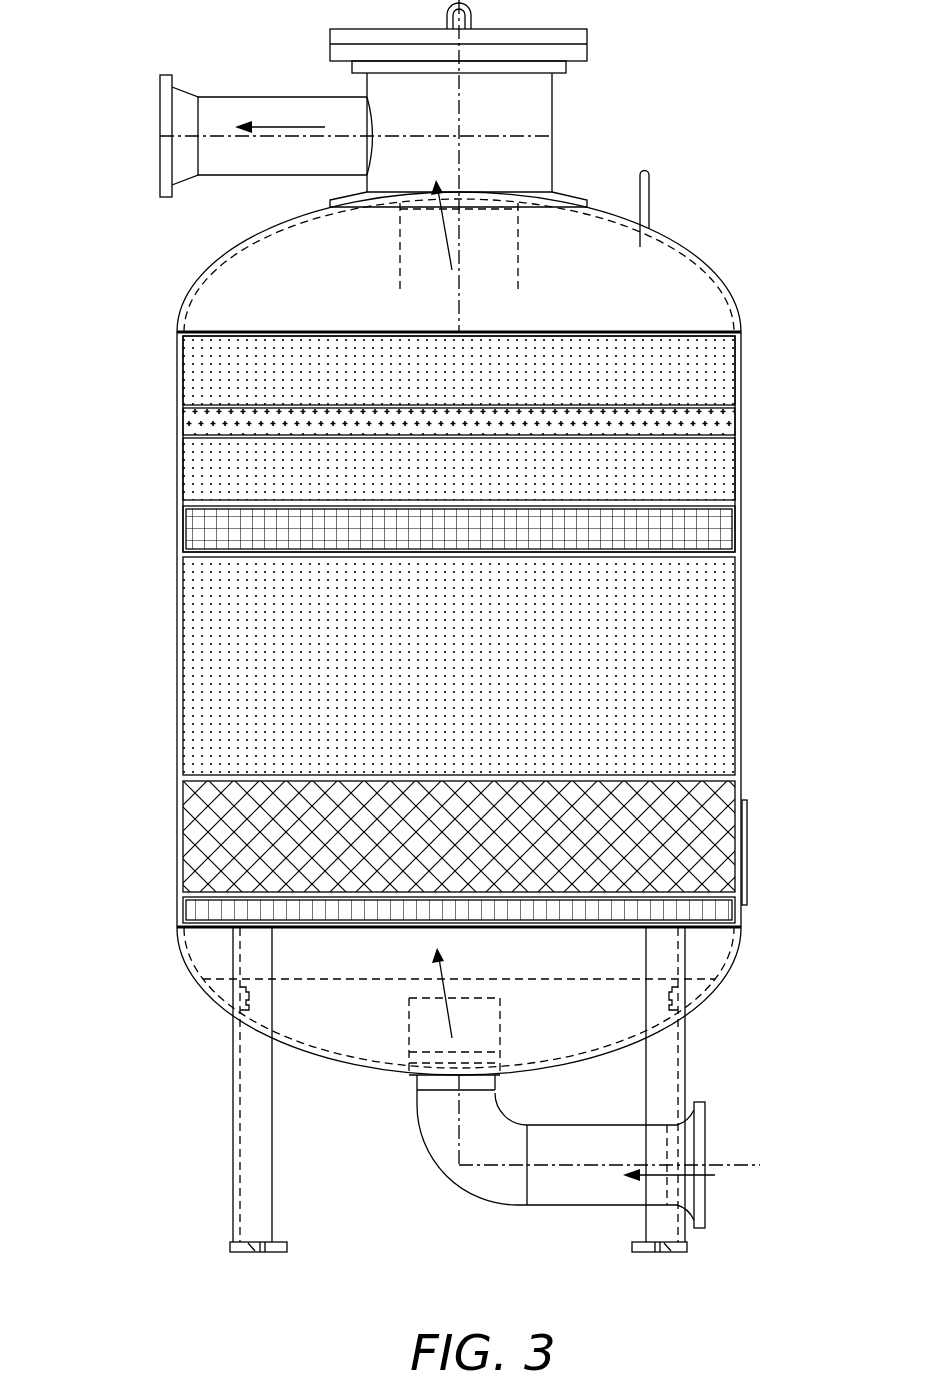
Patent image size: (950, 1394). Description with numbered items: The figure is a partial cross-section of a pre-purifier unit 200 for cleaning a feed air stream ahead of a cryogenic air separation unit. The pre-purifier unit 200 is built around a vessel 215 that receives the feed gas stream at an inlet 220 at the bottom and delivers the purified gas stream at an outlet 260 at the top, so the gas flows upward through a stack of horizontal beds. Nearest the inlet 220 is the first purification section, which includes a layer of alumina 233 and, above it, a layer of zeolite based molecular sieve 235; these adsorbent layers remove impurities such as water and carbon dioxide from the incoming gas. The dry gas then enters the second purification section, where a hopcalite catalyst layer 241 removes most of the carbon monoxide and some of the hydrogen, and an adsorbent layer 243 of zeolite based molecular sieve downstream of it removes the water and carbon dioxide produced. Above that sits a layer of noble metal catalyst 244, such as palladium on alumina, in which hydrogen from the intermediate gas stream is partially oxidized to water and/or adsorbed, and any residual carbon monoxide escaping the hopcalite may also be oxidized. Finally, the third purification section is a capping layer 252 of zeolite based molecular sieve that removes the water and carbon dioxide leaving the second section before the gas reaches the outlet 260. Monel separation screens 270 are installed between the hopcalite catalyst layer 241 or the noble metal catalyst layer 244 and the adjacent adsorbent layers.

The pre-purifier unit 200 is at (766, 63).
The vessel 215 is at (670, 238).
The outlet 260 is at (182, 132).
The Monel separation screens 270 is at (203, 383).
The capping layer 252 is at (715, 358).
The noble metal catalyst layer 244 is at (727, 417).
The adsorbent layer 243 is at (705, 470).
The hopcalite catalyst layer 241 is at (700, 532).
The layer of zeolite based molecular sieve 235 is at (707, 674).
The layer of alumina 233 is at (716, 840).
The inlet 220 is at (705, 1143).